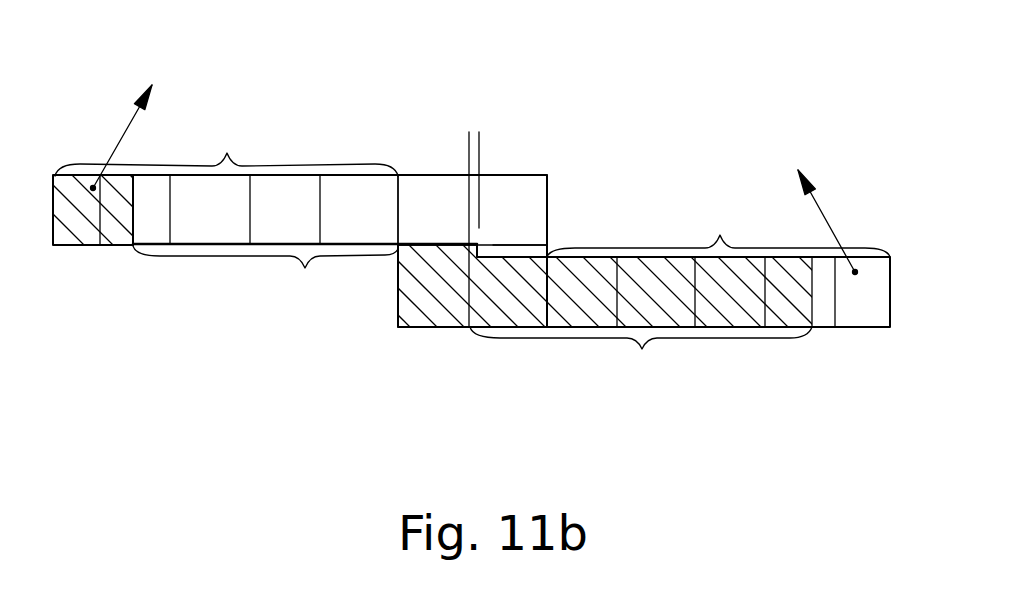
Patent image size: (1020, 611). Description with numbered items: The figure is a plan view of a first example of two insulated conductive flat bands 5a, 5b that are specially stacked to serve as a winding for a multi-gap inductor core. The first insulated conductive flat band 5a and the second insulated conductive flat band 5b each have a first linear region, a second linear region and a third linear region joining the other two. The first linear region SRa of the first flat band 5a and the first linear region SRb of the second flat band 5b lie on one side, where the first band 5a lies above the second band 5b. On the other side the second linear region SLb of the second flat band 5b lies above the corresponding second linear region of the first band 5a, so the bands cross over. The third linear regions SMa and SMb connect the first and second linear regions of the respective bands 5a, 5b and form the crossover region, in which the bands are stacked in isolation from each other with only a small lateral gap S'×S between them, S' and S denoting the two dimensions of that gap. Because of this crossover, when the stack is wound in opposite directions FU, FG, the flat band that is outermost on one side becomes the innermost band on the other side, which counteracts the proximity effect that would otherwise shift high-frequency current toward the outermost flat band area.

The first insulated conductive flat band 5a is at (108, 228).
The second insulated conductive flat band 5b is at (228, 233).
The first linear region of the second flat band SRb is at (226, 147).
The first linear region of the first flat band SRa is at (265, 279).
The third linear region of the first flat band SMa is at (515, 207).
The third linear region of the second flat band SMb is at (435, 285).
The second linear region of the second flat band SLb is at (680, 314).
The lateral gap width S' is at (472, 214).
The lateral gap height S is at (563, 234).
The first winding direction FU is at (127, 120).
The second winding direction FG is at (817, 204).